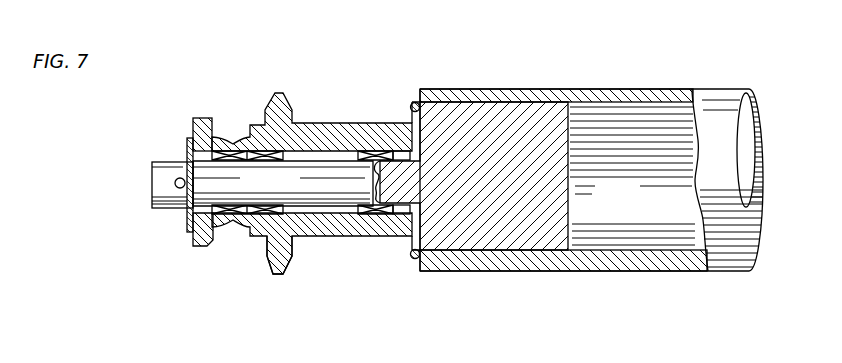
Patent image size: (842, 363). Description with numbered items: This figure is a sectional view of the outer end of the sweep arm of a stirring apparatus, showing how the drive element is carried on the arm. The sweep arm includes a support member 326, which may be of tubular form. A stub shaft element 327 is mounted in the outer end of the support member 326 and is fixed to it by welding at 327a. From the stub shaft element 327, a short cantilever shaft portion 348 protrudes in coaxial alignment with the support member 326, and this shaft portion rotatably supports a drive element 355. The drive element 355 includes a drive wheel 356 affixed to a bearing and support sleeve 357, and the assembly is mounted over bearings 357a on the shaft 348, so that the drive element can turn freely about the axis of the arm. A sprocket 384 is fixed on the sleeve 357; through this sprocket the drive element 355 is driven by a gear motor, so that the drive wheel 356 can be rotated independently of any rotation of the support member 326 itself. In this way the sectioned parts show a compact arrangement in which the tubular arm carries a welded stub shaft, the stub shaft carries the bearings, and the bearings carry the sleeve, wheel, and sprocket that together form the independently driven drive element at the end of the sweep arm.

The support member 326 is at (603, 88).
The stub shaft element 327 is at (545, 195).
The weld 327a is at (413, 105).
The cantilever shaft portion 348 is at (327, 195).
The drive element 355 is at (244, 189).
The drive wheel 356 is at (212, 118).
The bearing and support sleeve 357 is at (357, 124).
The bearings 357a is at (193, 228).
The sprocket 384 is at (273, 270).